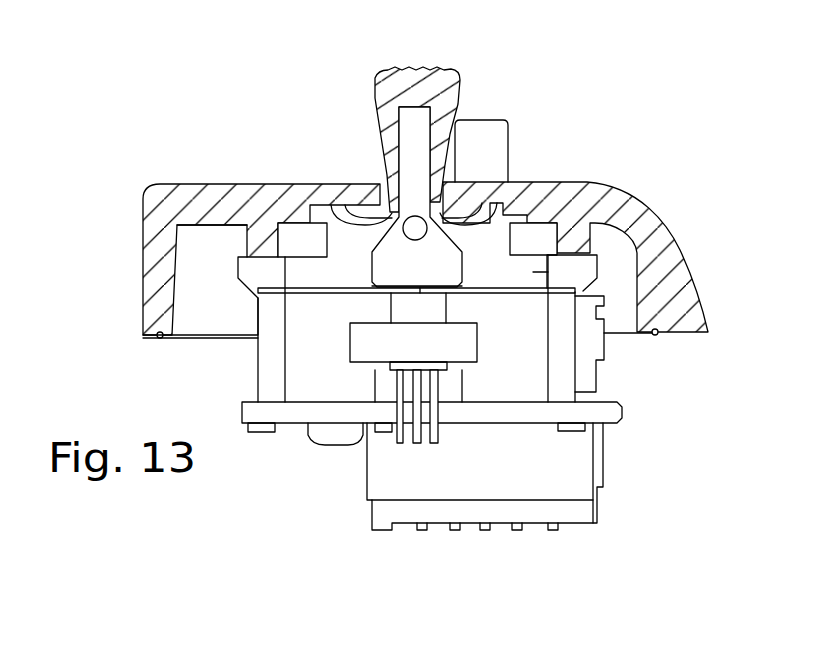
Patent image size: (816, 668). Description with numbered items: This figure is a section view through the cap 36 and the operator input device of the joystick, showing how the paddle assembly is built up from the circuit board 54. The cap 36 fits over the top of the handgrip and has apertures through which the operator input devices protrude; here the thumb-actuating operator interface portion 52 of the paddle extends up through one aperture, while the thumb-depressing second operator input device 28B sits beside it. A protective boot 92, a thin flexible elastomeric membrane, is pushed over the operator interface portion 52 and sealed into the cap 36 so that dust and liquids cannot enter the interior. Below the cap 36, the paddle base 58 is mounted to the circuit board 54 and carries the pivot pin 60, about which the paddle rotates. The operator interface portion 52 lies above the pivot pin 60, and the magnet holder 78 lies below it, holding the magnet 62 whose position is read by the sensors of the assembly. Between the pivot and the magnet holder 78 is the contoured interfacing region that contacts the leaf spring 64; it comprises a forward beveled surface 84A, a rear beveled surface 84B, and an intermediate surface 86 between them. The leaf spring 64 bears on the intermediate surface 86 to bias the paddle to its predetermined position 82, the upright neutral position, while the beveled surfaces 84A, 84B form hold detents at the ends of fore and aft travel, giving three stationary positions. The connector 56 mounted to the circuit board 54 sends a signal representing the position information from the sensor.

The cap 36 is at (180, 183).
The paddle base 58 is at (548, 272).
The second operator input device 28B is at (509, 122).
The predetermined position 82 is at (420, 64).
The protective boot 92 is at (443, 99).
The operator interface portion 52 is at (410, 148).
The pivot pin 60 is at (415, 228).
The forward beveled surface 84A is at (350, 278).
The rear beveled surface 84B is at (470, 291).
The intermediate surface 86 is at (425, 290).
The leaf spring 64 is at (310, 293).
The magnet holder 78 is at (400, 307).
The magnet 62 is at (373, 347).
The circuit board 54 is at (622, 405).
The connector 56 is at (573, 482).